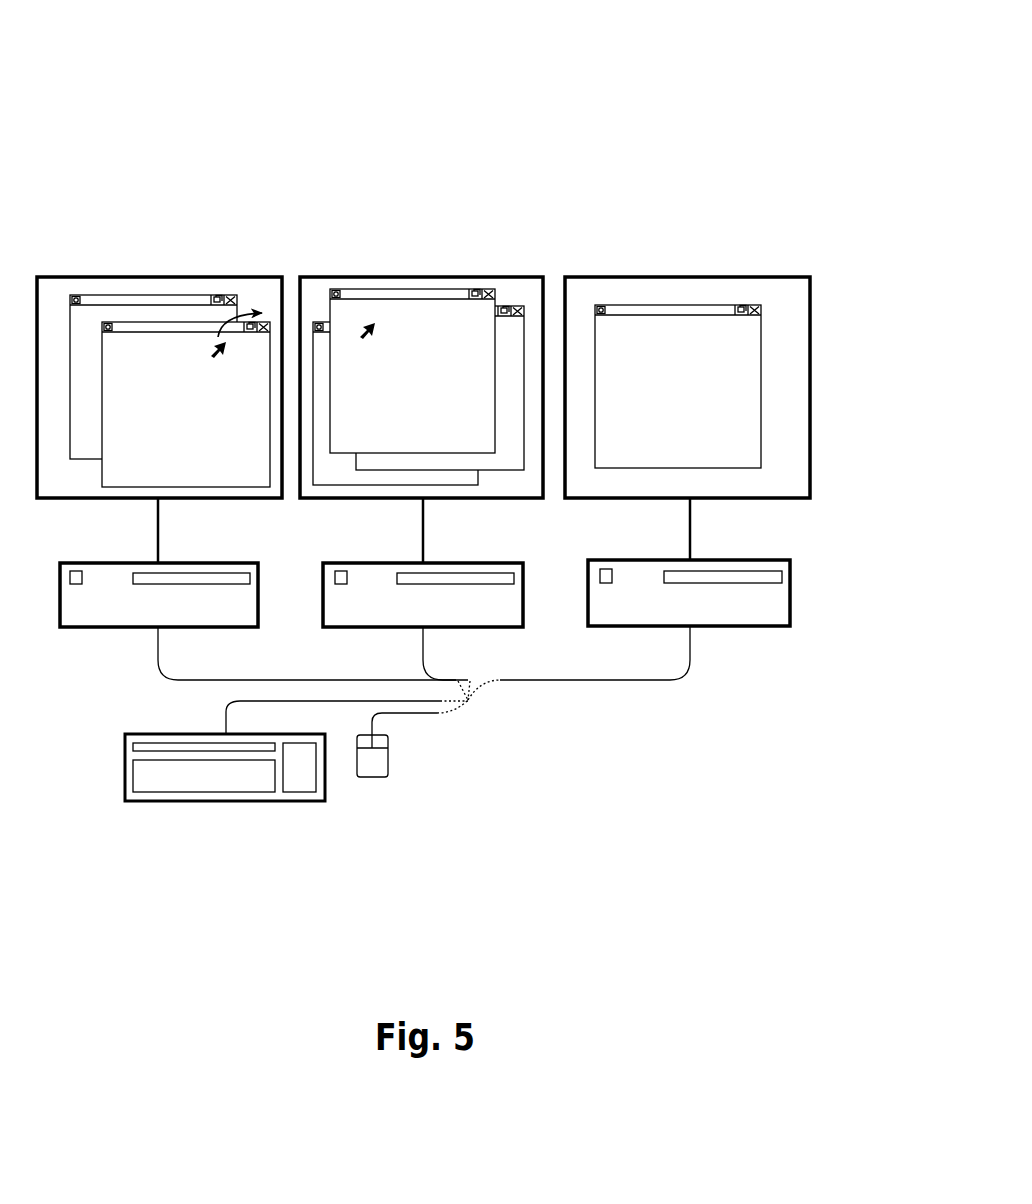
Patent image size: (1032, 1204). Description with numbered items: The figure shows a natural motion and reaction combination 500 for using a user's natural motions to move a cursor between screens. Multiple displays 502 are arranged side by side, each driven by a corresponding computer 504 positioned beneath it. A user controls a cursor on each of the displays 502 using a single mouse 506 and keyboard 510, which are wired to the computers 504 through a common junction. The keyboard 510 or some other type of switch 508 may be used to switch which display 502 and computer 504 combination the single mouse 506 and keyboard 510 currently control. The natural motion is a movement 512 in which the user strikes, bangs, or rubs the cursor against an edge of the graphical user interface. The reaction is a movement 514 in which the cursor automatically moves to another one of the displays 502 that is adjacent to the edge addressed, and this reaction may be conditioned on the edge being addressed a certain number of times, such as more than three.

The natural motion and reaction combination 500 is at (780, 106).
The displays 502 is at (832, 276).
The computer 504 is at (826, 592).
The mouse 506 is at (397, 808).
The switch 508 is at (474, 724).
The keyboard 510 is at (171, 825).
The movement 512 is at (271, 301).
The movement 514 is at (381, 311).